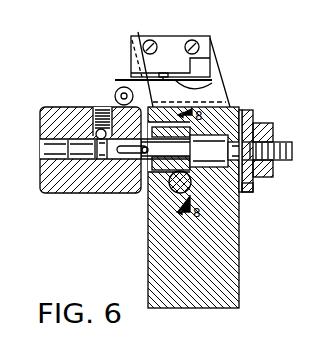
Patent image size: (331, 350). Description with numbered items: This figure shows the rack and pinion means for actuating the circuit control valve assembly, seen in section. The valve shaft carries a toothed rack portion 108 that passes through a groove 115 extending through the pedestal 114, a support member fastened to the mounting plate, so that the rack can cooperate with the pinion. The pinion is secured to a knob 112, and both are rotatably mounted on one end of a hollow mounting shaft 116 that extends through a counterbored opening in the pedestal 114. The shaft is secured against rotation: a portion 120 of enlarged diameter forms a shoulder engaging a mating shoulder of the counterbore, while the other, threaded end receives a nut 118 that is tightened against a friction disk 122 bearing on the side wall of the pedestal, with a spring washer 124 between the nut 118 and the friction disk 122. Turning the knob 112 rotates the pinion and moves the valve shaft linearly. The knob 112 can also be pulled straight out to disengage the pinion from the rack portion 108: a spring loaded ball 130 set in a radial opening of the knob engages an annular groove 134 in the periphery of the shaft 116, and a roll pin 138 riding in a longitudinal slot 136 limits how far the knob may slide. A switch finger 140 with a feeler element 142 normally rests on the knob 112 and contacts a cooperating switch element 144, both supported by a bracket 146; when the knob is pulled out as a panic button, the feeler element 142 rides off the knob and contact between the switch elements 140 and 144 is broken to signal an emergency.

The rack portion 108 is at (171, 190).
The knob 112 is at (48, 107).
The pedestal 114 is at (238, 261).
The groove 115 is at (175, 200).
The hollow mounting shaft 116 is at (232, 151).
The nut 118 is at (276, 173).
The enlarged diameter portion 120 is at (236, 111).
The friction disk 122 is at (248, 115).
The spring washer 124 is at (250, 186).
The spring loaded ball 130 is at (97, 133).
The annular groove 134 is at (103, 157).
The longitudinal slot 136 is at (131, 158).
The roll pin 138 is at (148, 150).
The switch finger 140 is at (218, 85).
The feeler element 142 is at (113, 93).
The cooperating switch element 144 is at (164, 73).
The bracket 146 is at (134, 34).